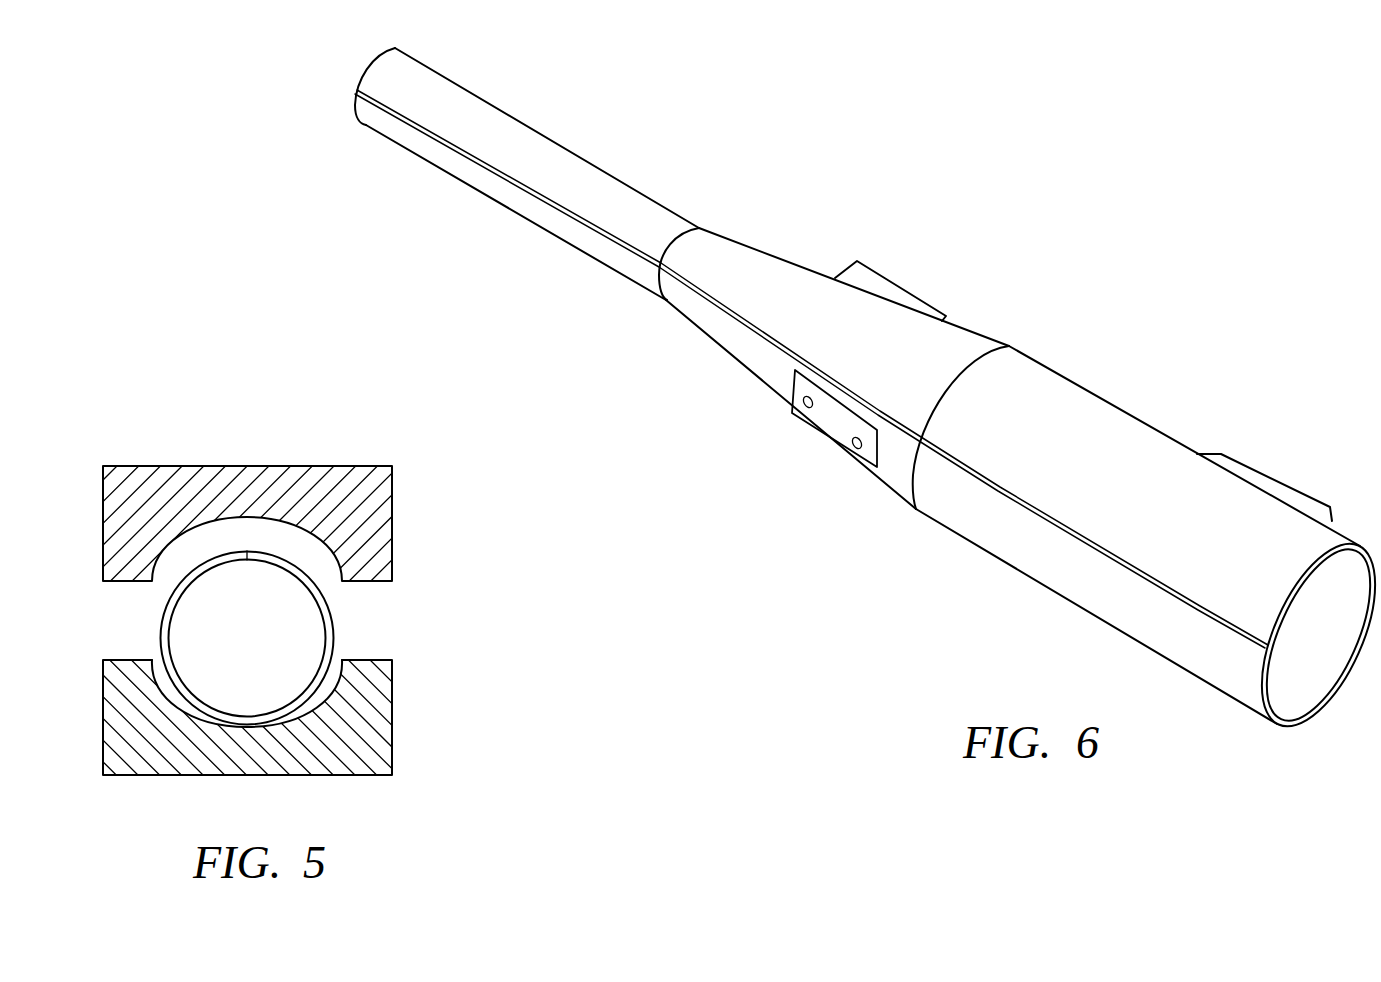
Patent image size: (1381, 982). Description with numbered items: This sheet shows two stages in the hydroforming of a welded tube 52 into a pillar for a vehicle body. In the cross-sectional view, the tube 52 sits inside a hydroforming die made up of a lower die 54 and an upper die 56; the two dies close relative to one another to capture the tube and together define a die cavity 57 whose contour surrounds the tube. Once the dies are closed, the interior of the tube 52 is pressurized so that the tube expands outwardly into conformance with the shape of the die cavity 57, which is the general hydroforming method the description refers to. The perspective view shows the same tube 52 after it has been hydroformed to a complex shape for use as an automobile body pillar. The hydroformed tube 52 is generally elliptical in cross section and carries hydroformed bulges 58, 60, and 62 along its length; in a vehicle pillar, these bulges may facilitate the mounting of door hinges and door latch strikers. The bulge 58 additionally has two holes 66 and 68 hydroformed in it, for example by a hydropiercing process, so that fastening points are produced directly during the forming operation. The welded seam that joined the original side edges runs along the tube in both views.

In FIG. 5, the tube 52 is at (333, 619).
In FIG. 6, the tube 52 is at (1032, 394).
In FIG. 5, the lower die 54 is at (112, 717).
In FIG. 5, the upper die 56 is at (110, 518).
In FIG. 5, the die cavity 57 is at (338, 666).
In FIG. 6, the bulge 58 is at (825, 420).
In FIG. 6, the bulge 60 is at (892, 290).
In FIG. 6, the bulge 62 is at (1276, 489).
In FIG. 6, the hole 66 is at (803, 408).
In FIG. 6, the hole 68 is at (855, 449).